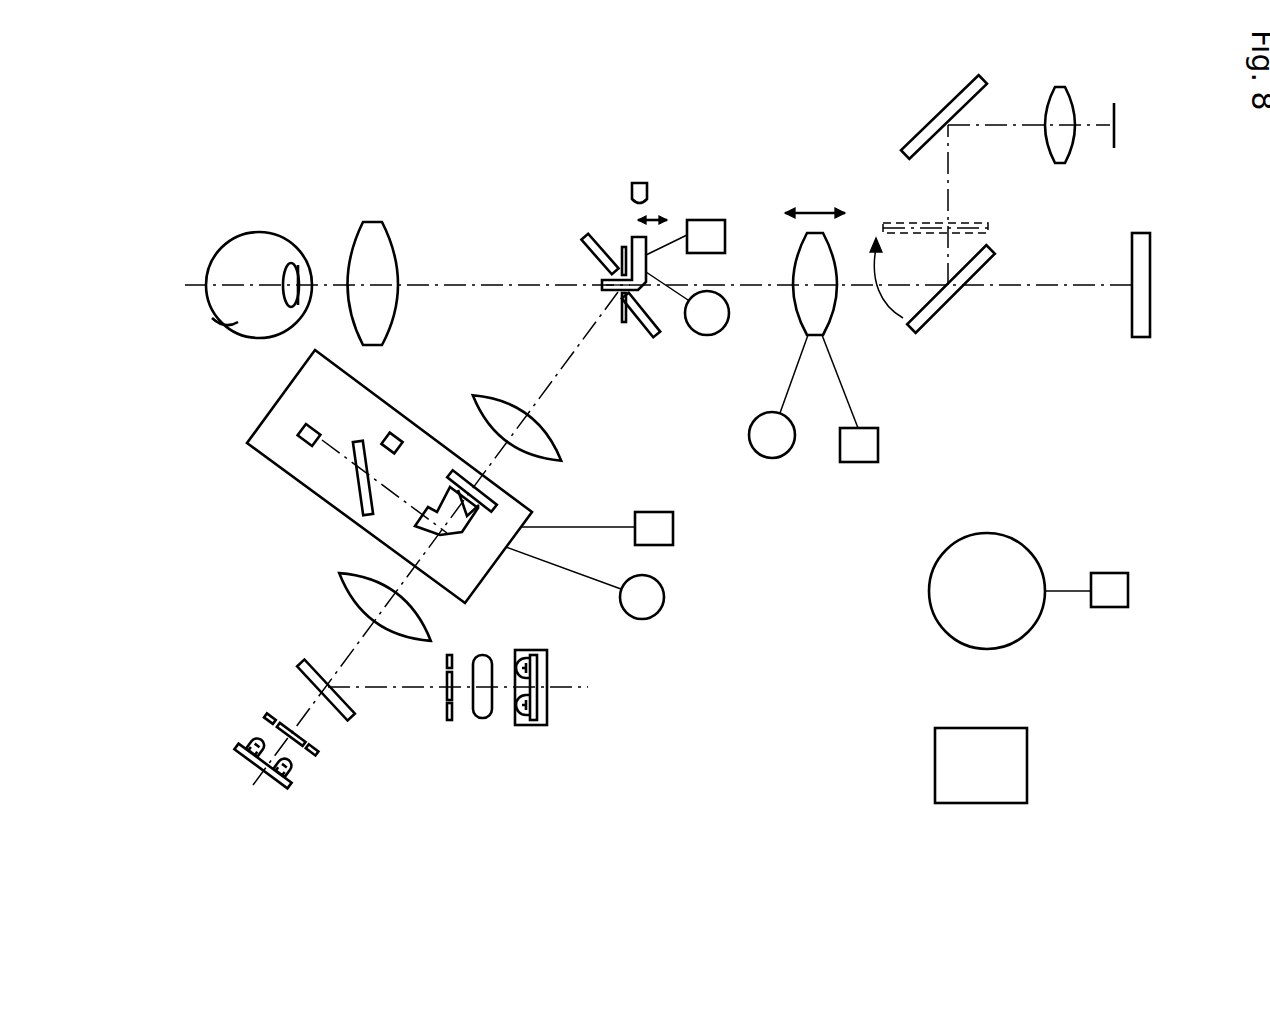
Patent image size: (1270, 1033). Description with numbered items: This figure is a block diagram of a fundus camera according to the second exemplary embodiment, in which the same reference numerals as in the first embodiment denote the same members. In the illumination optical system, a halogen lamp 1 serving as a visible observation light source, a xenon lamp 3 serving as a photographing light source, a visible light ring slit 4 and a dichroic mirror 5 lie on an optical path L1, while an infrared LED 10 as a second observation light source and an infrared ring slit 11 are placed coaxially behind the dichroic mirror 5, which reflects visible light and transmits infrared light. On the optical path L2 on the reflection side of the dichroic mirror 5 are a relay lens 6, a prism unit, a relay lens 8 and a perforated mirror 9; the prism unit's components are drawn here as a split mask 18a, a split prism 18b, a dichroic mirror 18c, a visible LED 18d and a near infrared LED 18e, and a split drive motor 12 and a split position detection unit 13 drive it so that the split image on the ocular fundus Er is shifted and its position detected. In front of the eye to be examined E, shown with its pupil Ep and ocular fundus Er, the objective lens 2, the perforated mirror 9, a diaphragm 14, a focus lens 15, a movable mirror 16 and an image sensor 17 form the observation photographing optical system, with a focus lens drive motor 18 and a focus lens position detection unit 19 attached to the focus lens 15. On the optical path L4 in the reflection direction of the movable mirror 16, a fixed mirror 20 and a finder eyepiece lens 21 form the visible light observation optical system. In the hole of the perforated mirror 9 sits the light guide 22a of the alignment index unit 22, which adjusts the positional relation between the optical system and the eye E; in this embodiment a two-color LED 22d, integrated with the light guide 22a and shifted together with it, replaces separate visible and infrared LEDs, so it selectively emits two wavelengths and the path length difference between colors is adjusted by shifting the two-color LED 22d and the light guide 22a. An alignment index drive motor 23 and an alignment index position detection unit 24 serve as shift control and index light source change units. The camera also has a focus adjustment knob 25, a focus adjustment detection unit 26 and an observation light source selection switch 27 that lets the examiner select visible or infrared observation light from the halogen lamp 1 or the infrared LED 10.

The halogen lamp 1 is at (534, 727).
The objective lens 2 is at (371, 222).
The xenon lamp 3 is at (465, 283).
The visible light ring slit 4 is at (449, 723).
The dichroic mirror 5 is at (305, 663).
The relay lens 6 is at (343, 578).
The relay lens 8 is at (490, 395).
The perforated mirror 9 is at (583, 238).
The infrared light emitting diode 10 is at (243, 751).
The infrared ring slit 11 is at (268, 716).
The split drive motor 12 is at (665, 606).
The split position detection unit 13 is at (675, 528).
The diaphragm 14 is at (623, 323).
The focus lens 15 is at (794, 250).
The movable mirror 16 is at (925, 325).
The image sensor 17 is at (1138, 233).
The focus lens drive motor 18 is at (773, 459).
The reflecting plate 18a is at (498, 503).
The prism 18b is at (455, 535).
The filter plate 18c is at (357, 490).
The light source element 18d is at (300, 442).
The light source element 18e is at (398, 436).
The focus lens position detection unit 19 is at (860, 463).
The fixed mirror 20 is at (965, 87).
The finder eyepiece lens 21 is at (1060, 87).
The alignment index unit 22 is at (688, 172).
The light guide 22a is at (634, 237).
The two-color LED 22d is at (640, 183).
The alignment index drive motor 23 is at (703, 336).
The alignment index position detection unit 24 is at (712, 219).
The focus adjustment knob 25 is at (985, 533).
The focus adjustment detection unit 26 is at (1110, 573).
The observation light source selection switch 27 is at (980, 803).
The eye to be examined E is at (250, 237).
The pupil Ep is at (307, 264).
The ocular fundus Er is at (228, 320).
The optical path L1 is at (568, 690).
The optical path L2 is at (550, 384).
The optical path L4 is at (948, 174).